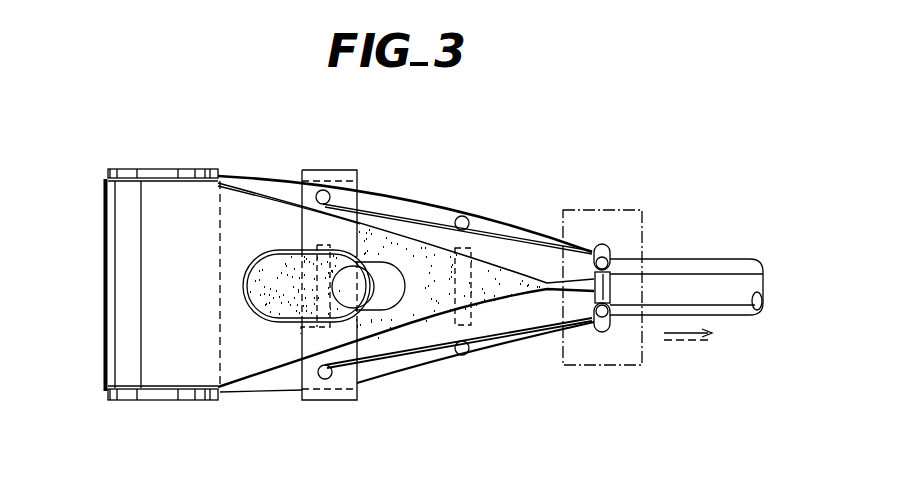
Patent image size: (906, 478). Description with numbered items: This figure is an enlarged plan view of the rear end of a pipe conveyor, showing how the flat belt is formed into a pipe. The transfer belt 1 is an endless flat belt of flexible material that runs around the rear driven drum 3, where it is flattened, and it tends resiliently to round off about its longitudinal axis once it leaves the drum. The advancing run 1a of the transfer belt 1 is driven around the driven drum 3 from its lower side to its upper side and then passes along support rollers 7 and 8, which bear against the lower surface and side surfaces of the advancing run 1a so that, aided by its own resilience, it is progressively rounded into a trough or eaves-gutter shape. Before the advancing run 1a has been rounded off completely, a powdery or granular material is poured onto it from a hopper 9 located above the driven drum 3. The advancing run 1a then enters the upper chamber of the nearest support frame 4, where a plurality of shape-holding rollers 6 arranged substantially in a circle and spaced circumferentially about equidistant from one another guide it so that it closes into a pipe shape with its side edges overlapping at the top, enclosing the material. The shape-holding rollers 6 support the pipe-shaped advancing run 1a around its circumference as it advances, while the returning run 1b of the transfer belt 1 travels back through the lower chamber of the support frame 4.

The transfer belt 1 is at (686, 244).
The advancing run 1a is at (731, 257).
The returning run 1b is at (424, 209).
The rear driven drum 3 is at (148, 401).
The support frame 4 is at (583, 210).
The shape-holding roller 6 is at (608, 290).
The support roller 7 is at (301, 334).
The support roller 8 is at (327, 190).
The hopper 9 is at (275, 251).